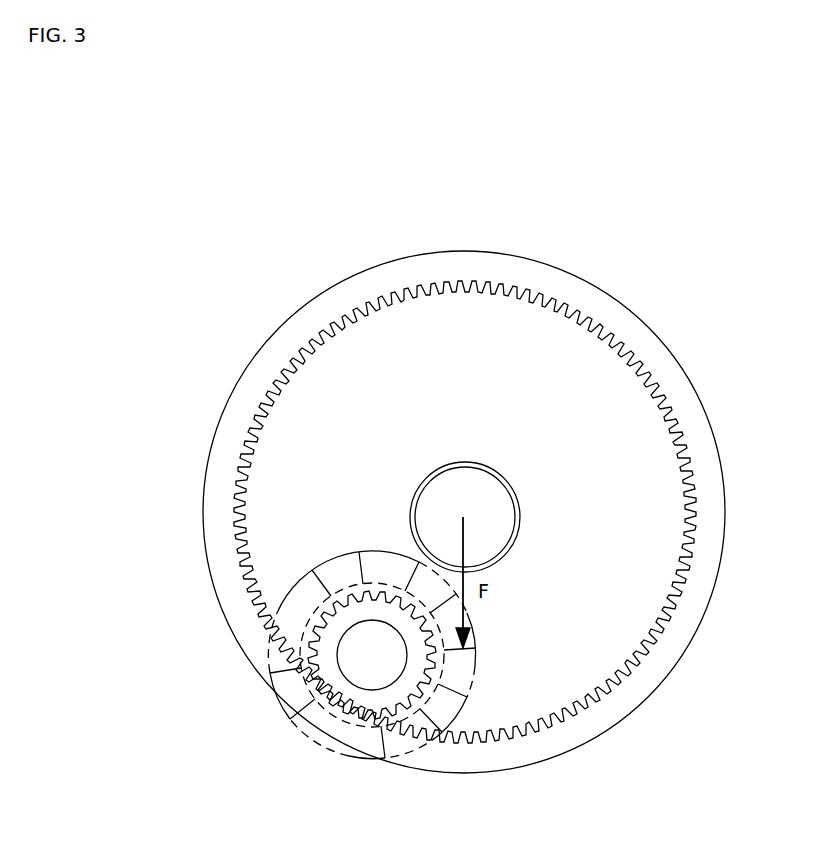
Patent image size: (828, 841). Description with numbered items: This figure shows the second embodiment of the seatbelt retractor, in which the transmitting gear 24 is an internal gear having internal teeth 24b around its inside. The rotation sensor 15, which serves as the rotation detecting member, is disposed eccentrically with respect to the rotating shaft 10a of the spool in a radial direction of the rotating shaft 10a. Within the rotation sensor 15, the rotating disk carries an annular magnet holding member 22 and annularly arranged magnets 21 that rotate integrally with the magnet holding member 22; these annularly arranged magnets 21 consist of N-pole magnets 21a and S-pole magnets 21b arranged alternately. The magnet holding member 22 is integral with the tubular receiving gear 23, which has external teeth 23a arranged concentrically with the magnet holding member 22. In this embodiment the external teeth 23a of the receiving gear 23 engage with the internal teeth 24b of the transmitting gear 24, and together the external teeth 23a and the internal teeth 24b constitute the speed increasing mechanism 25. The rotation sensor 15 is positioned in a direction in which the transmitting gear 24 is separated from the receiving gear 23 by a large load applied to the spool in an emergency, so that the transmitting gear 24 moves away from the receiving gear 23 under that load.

The transmitting gear 24 is at (600, 303).
The internal teeth 24b is at (640, 383).
The rotating shaft 10a is at (472, 478).
The annularly arranged magnets 21 is at (390, 469).
The N-pole magnets 21a is at (381, 562).
The S-pole magnets 21b is at (334, 568).
The rotation sensor 15 is at (492, 627).
The magnet holding member 22 is at (473, 682).
The receiving gear 23 is at (330, 700).
The external teeth 23a is at (308, 625).
The speed increasing mechanism 25 is at (357, 740).